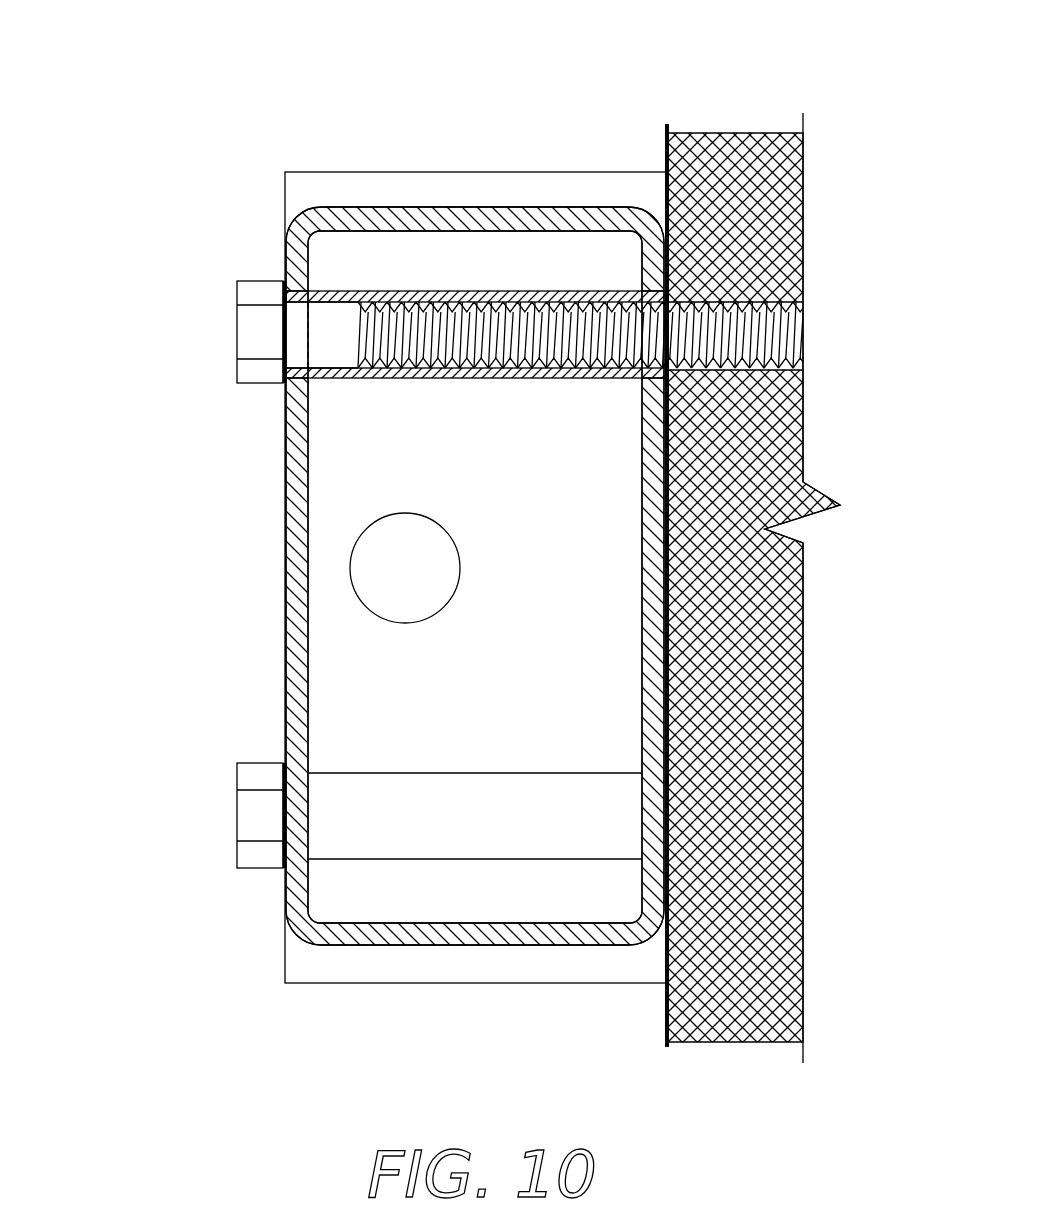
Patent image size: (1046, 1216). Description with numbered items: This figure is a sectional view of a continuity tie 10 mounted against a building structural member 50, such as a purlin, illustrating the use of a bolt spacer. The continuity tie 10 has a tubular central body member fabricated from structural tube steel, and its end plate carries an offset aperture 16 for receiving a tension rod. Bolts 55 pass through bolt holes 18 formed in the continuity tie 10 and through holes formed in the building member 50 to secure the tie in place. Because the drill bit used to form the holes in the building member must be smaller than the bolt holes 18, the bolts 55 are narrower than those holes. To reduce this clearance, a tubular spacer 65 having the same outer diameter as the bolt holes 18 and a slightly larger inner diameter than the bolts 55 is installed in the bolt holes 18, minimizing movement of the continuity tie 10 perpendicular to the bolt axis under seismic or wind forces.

The continuity tie 10 is at (444, 172).
The offset aperture 16 is at (355, 540).
The bolt hole 18 is at (308, 327).
The building structural member 50 is at (763, 228).
The bolt 55 is at (237, 330).
The tubular spacer 65 is at (537, 378).